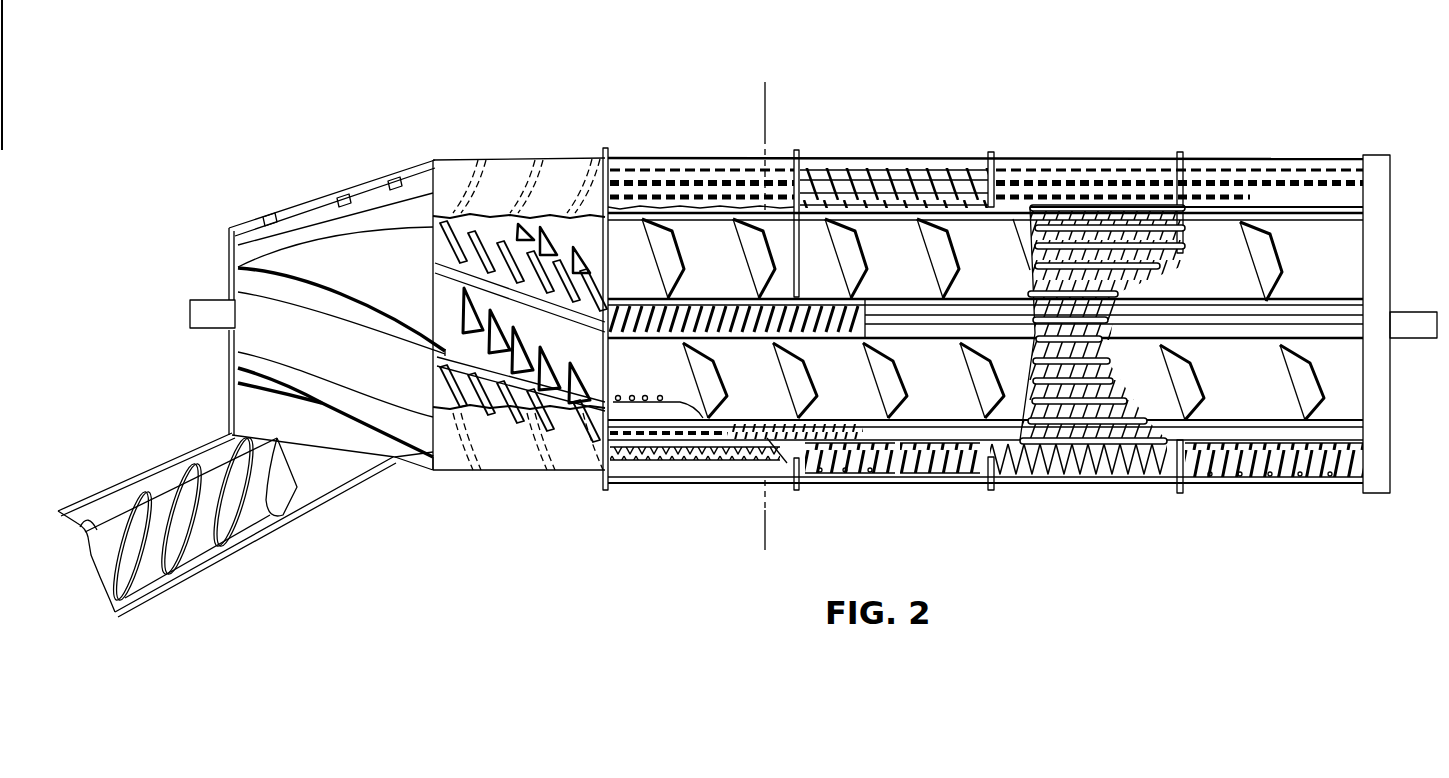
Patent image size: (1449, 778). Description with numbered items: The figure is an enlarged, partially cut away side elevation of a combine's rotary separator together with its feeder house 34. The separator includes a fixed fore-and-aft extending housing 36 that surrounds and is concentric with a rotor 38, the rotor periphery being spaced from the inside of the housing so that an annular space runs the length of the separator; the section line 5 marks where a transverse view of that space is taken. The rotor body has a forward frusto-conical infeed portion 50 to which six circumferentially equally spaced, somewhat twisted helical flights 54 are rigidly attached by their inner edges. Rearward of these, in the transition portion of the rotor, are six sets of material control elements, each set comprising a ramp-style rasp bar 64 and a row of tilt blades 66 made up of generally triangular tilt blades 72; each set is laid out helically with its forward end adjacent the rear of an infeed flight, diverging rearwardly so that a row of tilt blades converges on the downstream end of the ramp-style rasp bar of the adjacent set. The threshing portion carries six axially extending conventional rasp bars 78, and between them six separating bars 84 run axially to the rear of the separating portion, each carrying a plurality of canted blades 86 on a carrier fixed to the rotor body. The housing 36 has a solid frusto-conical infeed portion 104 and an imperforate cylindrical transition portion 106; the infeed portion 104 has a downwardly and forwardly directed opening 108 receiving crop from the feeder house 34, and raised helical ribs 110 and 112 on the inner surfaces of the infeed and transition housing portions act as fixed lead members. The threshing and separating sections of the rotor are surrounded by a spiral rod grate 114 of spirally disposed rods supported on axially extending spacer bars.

The section line 5- 5 is at (765, 82).
The feeder house 34 is at (197, 450).
The housing 36 is at (1065, 108).
The rotor 38 is at (1403, 349).
The forward frusto-conical infeed portion 50 is at (385, 374).
The helical flights 54 is at (289, 273).
The ramp-style rasp bar 64 is at (440, 250).
The row of tilt blades 66 is at (450, 307).
The tilt blades 72 is at (525, 342).
The rasp bars 78 is at (643, 341).
The separating bars 84 is at (1325, 258).
The canted blades 86 is at (1277, 247).
The infeed portion 104 is at (312, 170).
The transition portion 106 is at (492, 133).
The opening 108 is at (342, 464).
The raised helical ribs 110 is at (262, 220).
The raised helical ribs 112 is at (590, 185).
The spiral rod grate 114 is at (920, 153).